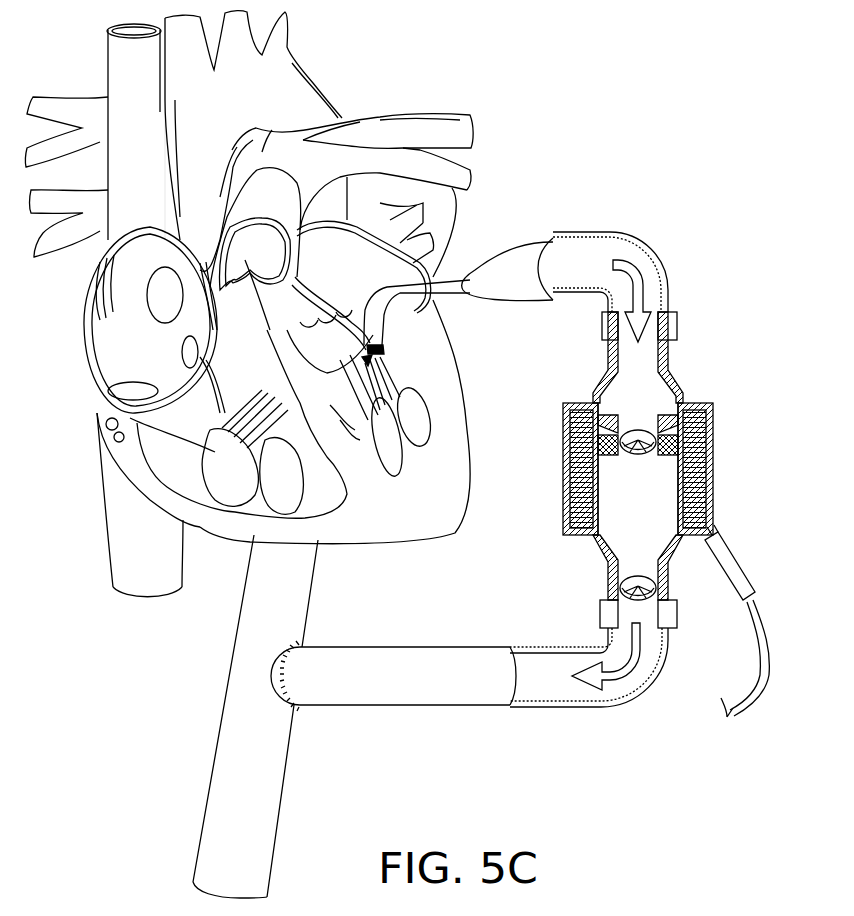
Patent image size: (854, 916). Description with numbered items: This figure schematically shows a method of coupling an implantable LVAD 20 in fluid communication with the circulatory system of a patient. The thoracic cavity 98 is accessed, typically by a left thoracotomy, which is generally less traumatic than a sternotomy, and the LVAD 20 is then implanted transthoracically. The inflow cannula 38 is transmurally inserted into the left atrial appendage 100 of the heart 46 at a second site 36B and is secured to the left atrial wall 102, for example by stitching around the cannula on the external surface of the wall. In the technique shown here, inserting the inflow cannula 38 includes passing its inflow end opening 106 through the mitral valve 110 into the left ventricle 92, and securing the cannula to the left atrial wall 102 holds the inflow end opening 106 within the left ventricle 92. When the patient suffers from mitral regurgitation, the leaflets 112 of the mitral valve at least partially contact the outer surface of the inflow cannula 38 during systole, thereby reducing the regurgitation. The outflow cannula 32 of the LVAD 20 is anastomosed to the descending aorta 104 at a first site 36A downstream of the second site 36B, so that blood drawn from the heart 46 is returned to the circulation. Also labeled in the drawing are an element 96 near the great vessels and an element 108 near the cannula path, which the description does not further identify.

The implantable LVAD 20 is at (698, 358).
The outflow cannula 32 is at (395, 705).
The first site 36A is at (300, 648).
The second site 36B is at (325, 428).
The inflow cannula 38 is at (533, 258).
The heart 46 is at (249, 304).
The left ventricle 92 is at (370, 427).
The aorta 96 is at (200, 130).
The thoracic cavity 98 is at (528, 413).
The left atrial appendage 100 is at (428, 306).
The left atrial wall 102 is at (433, 270).
The descending aorta 104 is at (266, 778).
The inflow end opening 106 is at (383, 360).
The blood flow path 108 is at (360, 306).
The mitral valve 110 is at (310, 292).
The leaflets 112 is at (365, 342).